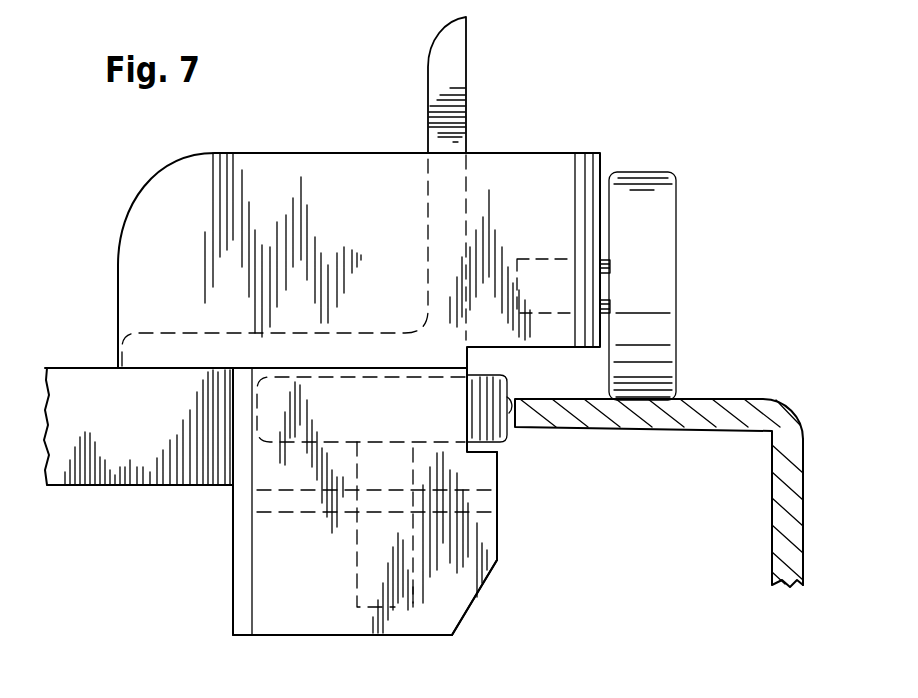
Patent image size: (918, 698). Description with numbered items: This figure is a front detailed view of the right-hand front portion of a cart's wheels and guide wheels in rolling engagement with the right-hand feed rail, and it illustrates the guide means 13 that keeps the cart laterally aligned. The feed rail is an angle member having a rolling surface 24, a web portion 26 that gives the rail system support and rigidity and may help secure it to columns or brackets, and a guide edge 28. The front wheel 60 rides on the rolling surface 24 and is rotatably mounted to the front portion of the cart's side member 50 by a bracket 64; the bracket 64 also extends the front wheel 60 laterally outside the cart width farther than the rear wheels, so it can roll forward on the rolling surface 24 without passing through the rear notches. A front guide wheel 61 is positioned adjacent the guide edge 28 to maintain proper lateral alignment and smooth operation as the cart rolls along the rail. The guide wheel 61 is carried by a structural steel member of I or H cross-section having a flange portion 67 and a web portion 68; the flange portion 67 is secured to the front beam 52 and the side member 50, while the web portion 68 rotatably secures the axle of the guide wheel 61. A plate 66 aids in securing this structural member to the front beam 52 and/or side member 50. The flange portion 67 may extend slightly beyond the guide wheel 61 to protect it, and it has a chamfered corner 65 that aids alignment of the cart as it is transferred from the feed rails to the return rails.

The guide means 13 is at (487, 599).
The rolling surface 24 is at (698, 399).
The web portion 26 is at (805, 482).
The guide edge 28 is at (509, 398).
The side member 50 is at (450, 65).
The front beam 52 is at (176, 487).
The front wheel 60 is at (655, 187).
The front guide wheel 61 is at (507, 440).
The bracket 64 is at (535, 167).
The chamfered corner 65 is at (478, 622).
The plate 66 is at (236, 568).
The flange portion 67 is at (295, 623).
The web portion 68 is at (487, 533).